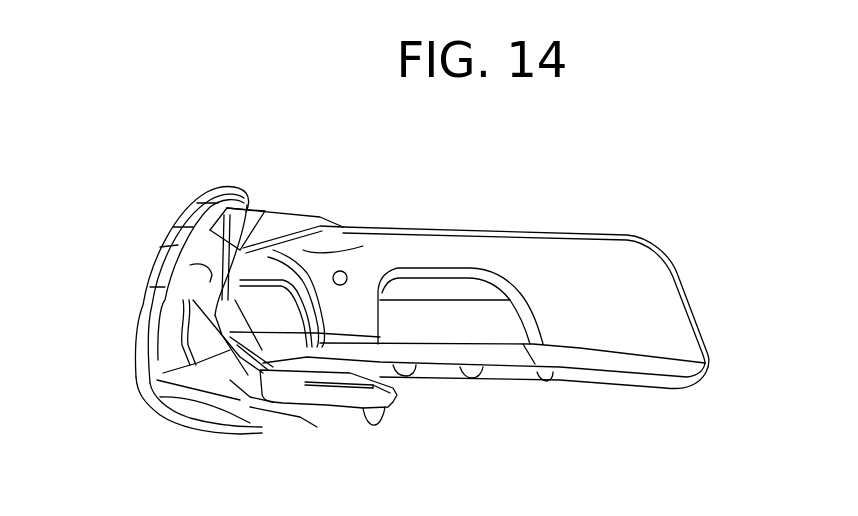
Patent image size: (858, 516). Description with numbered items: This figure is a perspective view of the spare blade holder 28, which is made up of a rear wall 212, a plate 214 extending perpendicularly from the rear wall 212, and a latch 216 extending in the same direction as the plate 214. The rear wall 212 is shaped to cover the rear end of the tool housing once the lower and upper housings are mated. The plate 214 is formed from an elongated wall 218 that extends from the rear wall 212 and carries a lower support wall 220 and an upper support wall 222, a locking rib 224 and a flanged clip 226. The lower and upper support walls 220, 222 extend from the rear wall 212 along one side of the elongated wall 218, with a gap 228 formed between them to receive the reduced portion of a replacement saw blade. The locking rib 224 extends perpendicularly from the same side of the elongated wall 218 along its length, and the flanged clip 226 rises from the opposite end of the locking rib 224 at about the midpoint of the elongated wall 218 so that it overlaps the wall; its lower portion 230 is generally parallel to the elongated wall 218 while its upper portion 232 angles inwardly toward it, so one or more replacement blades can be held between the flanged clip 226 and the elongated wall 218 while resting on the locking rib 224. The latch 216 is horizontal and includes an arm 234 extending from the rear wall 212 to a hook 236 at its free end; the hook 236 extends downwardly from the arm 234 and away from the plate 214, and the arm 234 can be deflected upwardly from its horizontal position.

The spare blade holder 28 is at (699, 264).
The rear wall 212 is at (133, 333).
The plate 214 is at (599, 263).
The latch 216 is at (322, 408).
The elongated wall 218 is at (421, 250).
The lower support wall 220 is at (194, 343).
The upper support wall 222 is at (287, 218).
The locking rib 224 is at (608, 363).
The flanged clip 226 is at (490, 332).
The gap 228 is at (347, 248).
The lower portion 230 is at (447, 331).
The upper portion 232 is at (473, 289).
The arm 234 is at (288, 403).
The hook 236 is at (377, 420).